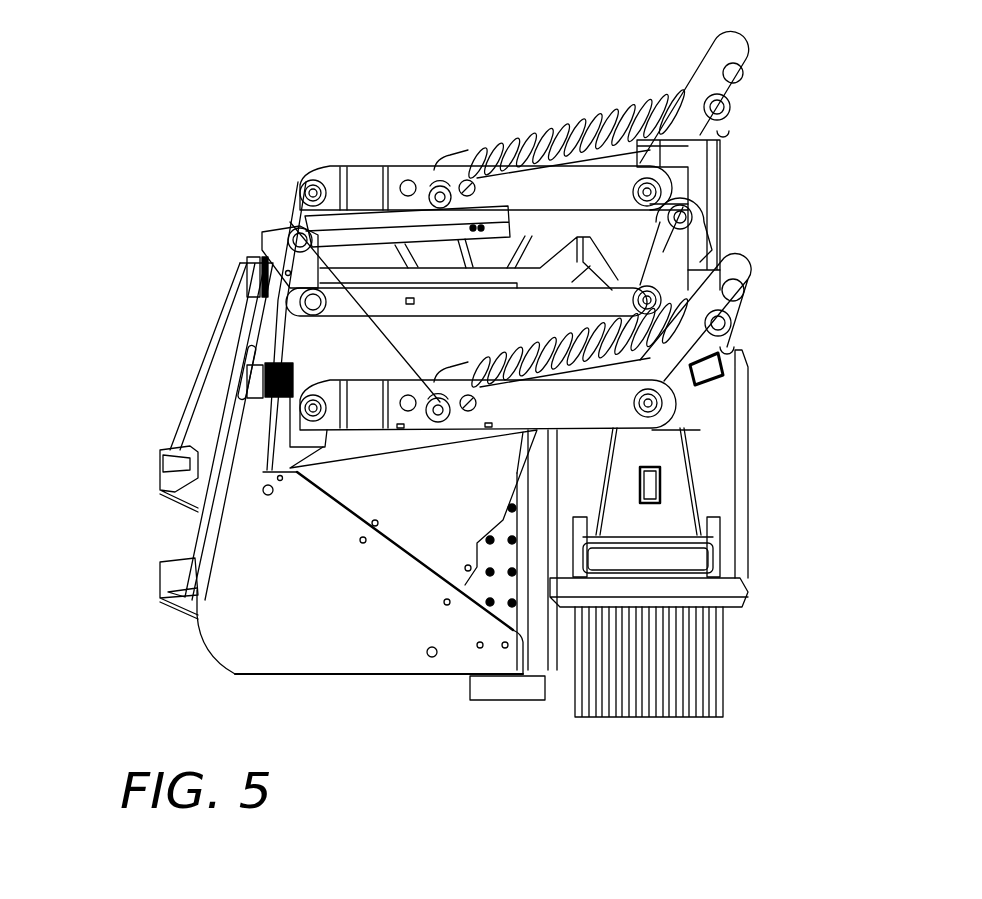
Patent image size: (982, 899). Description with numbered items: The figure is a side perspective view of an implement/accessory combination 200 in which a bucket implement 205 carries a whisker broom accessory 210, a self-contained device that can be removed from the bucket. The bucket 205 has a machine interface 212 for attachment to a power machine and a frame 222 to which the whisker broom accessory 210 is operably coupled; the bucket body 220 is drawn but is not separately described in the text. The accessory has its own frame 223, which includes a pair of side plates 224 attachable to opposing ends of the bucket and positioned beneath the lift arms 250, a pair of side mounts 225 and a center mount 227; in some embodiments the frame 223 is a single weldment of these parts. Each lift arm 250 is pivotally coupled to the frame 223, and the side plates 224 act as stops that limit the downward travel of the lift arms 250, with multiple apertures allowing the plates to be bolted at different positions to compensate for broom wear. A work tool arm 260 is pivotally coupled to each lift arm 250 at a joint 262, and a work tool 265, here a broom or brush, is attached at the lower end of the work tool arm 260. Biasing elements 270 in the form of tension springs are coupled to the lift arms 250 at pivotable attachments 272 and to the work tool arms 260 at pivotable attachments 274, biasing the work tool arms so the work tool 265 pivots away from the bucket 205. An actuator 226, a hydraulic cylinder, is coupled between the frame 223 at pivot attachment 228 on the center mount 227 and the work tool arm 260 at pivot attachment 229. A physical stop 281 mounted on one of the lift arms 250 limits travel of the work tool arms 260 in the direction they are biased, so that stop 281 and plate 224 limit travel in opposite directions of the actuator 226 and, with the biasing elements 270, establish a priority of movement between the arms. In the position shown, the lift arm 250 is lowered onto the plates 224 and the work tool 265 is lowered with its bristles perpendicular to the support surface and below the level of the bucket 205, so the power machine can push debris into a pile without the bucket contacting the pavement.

The implement/accessory combination 200 is at (293, 98).
The bucket implement 205 is at (287, 645).
The whisker broom accessory 210 is at (764, 438).
The machine interface 212 is at (215, 485).
The bucket 220 is at (240, 623).
The frame 222 is at (215, 597).
The frame 223 is at (660, 577).
The side plates 224 is at (405, 518).
The side mounts 225 is at (300, 440).
The actuator 226 is at (345, 233).
The center mount 227 is at (290, 293).
The pivot attachment 228 is at (287, 238).
The pivot attachment 229 is at (687, 217).
The lift arm 250 is at (430, 140).
The work tool arm 260 is at (733, 93).
The joint 262 is at (653, 410).
The work tool 265 is at (680, 622).
The biasing elements 270 is at (507, 133).
The pivotable attachments 272 is at (290, 360).
The pivotable attachments 274 is at (720, 307).
The physical stop 281 is at (590, 240).